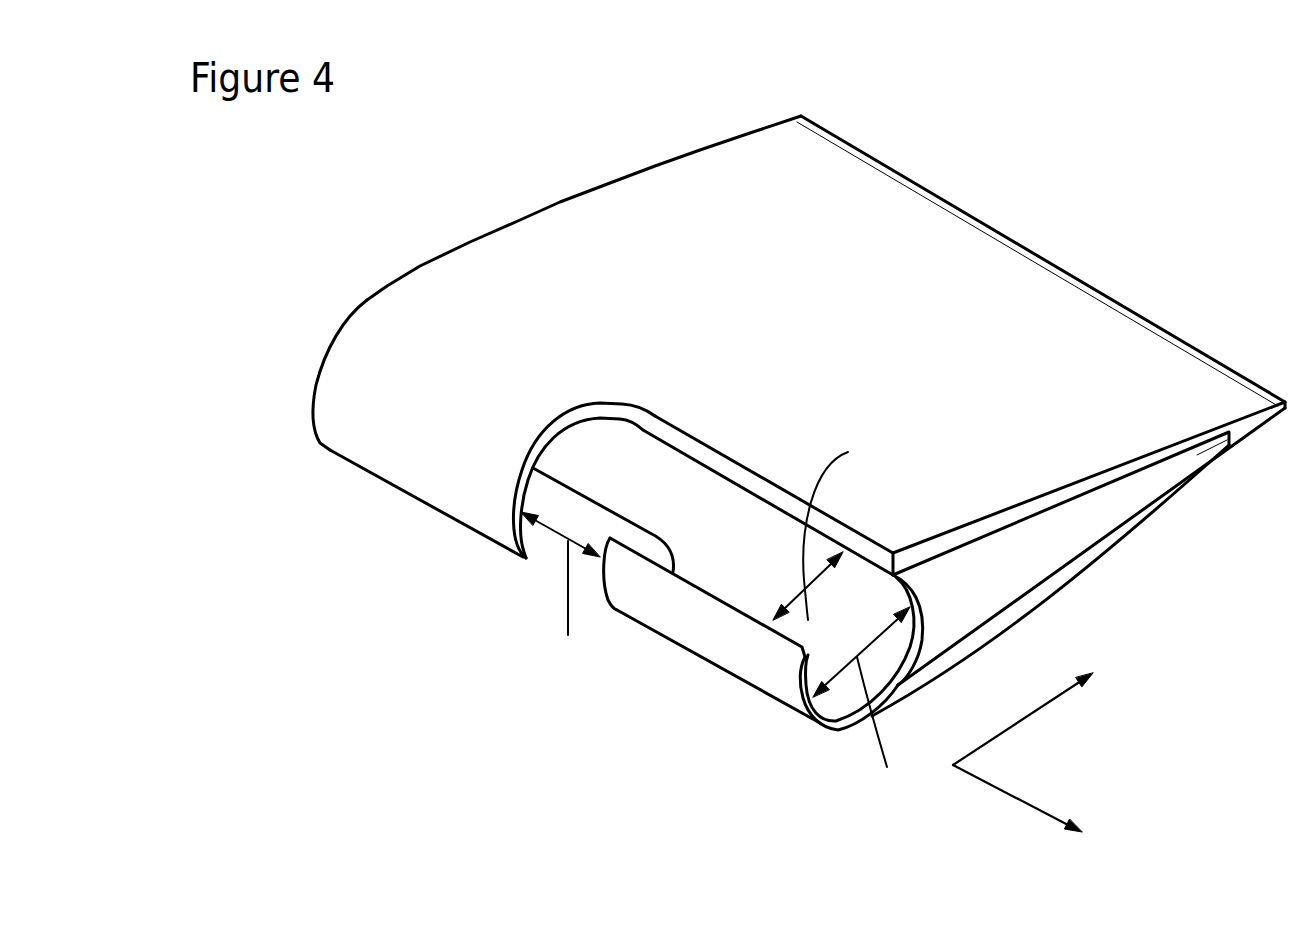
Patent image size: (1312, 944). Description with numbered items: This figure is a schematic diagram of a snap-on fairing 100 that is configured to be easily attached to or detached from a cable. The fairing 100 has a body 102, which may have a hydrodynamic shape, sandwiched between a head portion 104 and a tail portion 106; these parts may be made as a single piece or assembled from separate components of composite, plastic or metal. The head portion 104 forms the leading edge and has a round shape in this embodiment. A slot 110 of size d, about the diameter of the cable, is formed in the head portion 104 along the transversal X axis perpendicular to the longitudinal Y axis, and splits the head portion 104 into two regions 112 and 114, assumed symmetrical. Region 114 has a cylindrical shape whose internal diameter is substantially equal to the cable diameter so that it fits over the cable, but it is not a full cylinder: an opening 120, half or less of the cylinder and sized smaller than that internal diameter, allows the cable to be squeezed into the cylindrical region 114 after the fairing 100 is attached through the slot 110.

The fairing 100 is at (797, 52).
The body 102 is at (610, 207).
The head portion 104 is at (374, 323).
The tail portion 106 is at (844, 170).
The slot 110 is at (552, 555).
The region 112 is at (363, 425).
The region 114 is at (722, 647).
The opening 120 is at (740, 537).